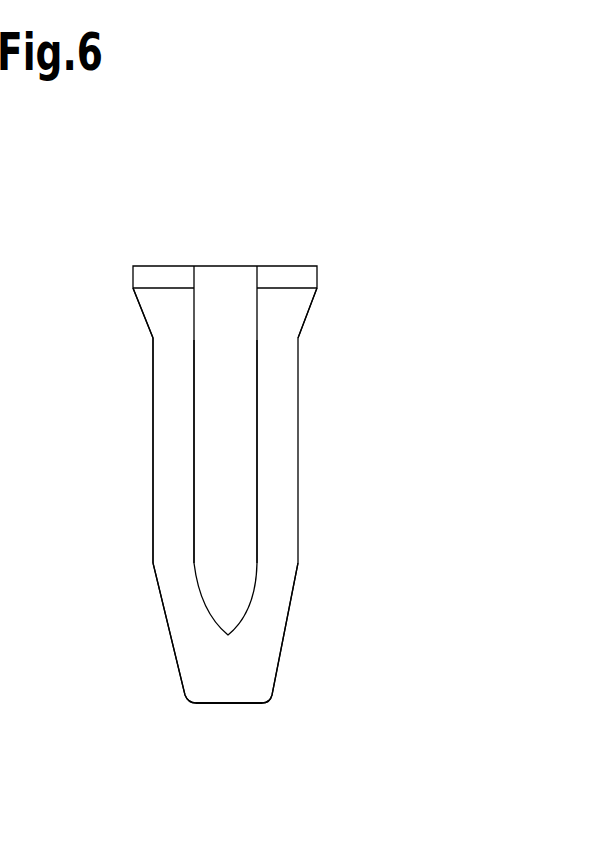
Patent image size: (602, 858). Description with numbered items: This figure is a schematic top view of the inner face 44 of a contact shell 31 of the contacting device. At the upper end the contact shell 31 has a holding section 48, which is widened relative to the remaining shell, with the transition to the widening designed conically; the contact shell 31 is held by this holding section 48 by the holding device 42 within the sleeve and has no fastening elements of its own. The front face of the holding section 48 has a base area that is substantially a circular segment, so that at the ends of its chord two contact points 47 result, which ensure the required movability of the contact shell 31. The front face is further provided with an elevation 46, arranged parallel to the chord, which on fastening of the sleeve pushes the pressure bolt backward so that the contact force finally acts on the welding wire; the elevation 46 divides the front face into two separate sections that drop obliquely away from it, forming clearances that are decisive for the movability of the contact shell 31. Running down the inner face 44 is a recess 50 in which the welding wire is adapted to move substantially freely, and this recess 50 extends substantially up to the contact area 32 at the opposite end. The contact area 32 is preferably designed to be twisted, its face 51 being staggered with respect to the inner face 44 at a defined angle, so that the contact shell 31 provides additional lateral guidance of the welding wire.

The contact shell 31 is at (388, 192).
The contact area 32 is at (264, 628).
The holding device 42 is at (4, 593).
The inner face 44 is at (169, 425).
The elevation 46 is at (223, 265).
The contact points 47 is at (351, 277).
The holding section 48 is at (361, 325).
The recess 50 is at (228, 473).
The face of the contact area 51 is at (232, 672).